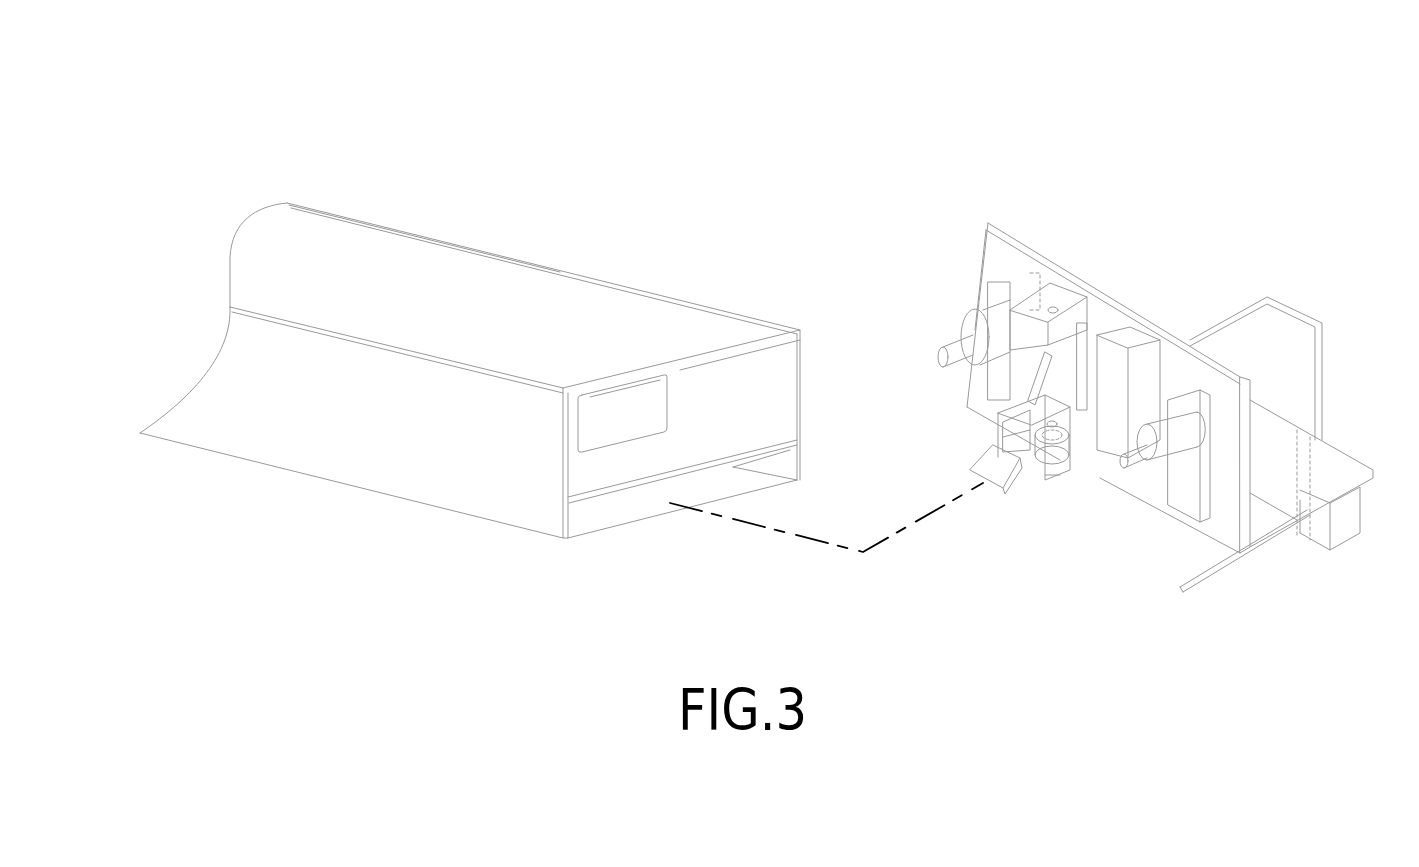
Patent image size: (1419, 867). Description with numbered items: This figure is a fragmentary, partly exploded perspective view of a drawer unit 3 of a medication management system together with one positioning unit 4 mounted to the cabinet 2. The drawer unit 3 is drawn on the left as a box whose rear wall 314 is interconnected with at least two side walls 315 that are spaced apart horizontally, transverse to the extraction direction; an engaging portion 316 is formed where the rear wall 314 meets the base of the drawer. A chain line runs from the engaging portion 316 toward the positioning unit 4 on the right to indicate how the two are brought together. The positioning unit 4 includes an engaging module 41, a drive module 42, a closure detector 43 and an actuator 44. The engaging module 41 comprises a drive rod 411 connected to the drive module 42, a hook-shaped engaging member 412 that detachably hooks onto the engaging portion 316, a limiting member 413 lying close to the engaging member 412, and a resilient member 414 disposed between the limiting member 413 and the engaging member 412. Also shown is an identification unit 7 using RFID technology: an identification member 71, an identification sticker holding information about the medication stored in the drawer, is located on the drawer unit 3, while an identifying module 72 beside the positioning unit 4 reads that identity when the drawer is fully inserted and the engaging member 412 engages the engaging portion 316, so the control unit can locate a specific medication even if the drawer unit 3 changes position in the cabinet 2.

The drawer unit 3 is at (443, 220).
The side walls 315 is at (512, 280).
The rear wall 314 is at (695, 380).
The identification unit 7 is at (623, 383).
The identification member 71 is at (648, 387).
The engaging portion 316 is at (637, 470).
The cabinet 2 is at (1035, 233).
The drive module 42 is at (1075, 303).
The closure detector 43 is at (1053, 357).
The positioning unit 4 is at (1127, 333).
The identifying module 72 is at (1113, 380).
The actuator 44 is at (1140, 400).
The engaging module 41 is at (983, 460).
The engaging member 412 is at (987, 493).
The limiting member 413 is at (1040, 480).
The drive rod 411 is at (1057, 410).
The resilient member 414 is at (1050, 460).